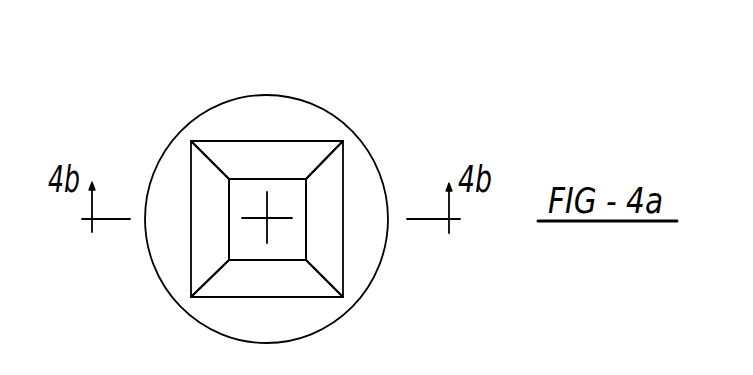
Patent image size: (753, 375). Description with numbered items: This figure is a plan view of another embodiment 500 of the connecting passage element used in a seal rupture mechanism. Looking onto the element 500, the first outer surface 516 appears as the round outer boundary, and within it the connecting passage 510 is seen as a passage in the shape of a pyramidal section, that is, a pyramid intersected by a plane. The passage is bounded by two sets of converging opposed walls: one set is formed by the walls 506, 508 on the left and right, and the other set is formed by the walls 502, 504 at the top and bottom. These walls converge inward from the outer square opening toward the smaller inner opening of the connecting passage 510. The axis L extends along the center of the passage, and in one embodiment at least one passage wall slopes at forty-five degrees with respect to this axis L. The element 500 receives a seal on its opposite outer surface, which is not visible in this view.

The connecting passage element 500 is at (462, 141).
The converging opposed wall 502 is at (258, 160).
The converging opposed wall 504 is at (258, 282).
The converging opposed wall 506 is at (212, 227).
The converging opposed wall 508 is at (323, 203).
The connecting passage 510 is at (252, 197).
The first outer surface 516 is at (255, 122).
The axis L is at (267, 218).